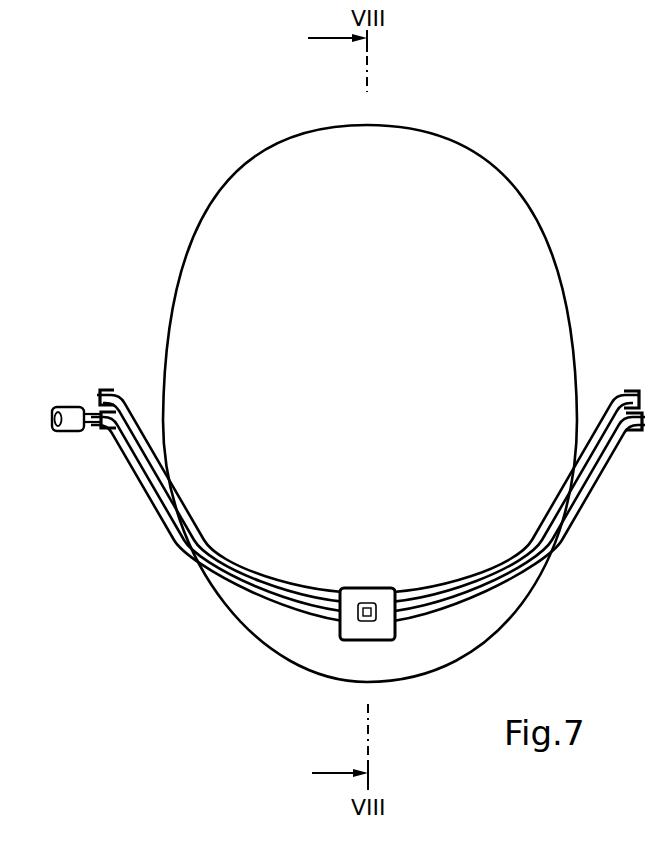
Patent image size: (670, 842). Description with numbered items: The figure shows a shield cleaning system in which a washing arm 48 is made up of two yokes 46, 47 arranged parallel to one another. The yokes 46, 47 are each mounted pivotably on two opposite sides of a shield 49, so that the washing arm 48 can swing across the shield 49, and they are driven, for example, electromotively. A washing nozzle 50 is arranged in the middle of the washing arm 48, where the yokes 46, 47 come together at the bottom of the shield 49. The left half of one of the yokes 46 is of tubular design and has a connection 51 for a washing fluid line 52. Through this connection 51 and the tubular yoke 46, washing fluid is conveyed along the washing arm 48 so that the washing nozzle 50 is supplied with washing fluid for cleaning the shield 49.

The yoke 46 is at (199, 548).
The yoke 47 is at (212, 565).
The washing arm 48 is at (246, 602).
The shield 49 is at (280, 172).
The washing nozzle 50 is at (367, 631).
The connection 51 is at (95, 424).
The washing fluid line 52 is at (70, 415).